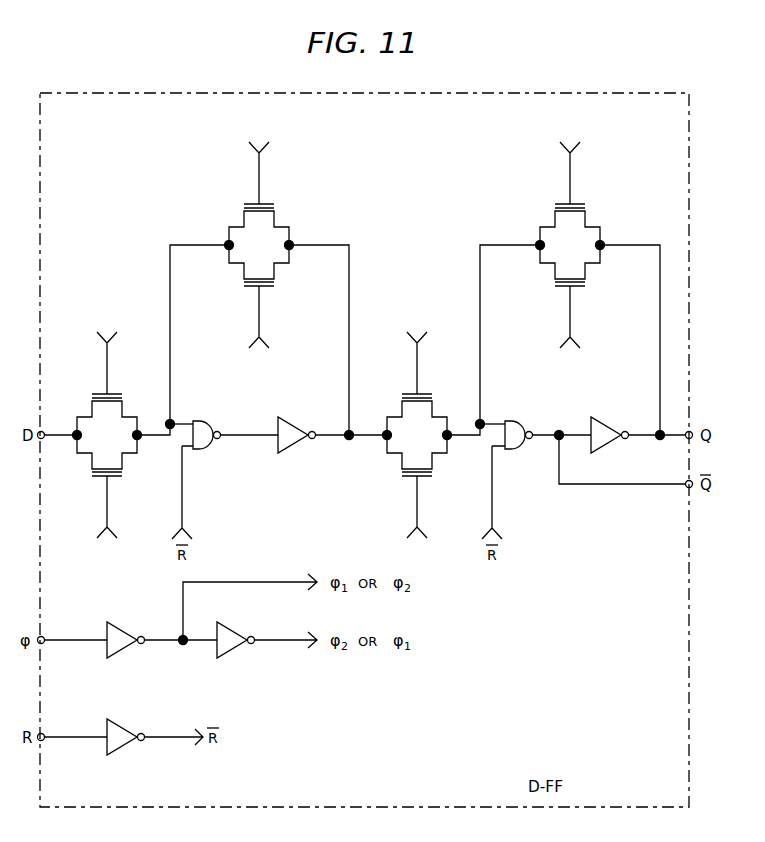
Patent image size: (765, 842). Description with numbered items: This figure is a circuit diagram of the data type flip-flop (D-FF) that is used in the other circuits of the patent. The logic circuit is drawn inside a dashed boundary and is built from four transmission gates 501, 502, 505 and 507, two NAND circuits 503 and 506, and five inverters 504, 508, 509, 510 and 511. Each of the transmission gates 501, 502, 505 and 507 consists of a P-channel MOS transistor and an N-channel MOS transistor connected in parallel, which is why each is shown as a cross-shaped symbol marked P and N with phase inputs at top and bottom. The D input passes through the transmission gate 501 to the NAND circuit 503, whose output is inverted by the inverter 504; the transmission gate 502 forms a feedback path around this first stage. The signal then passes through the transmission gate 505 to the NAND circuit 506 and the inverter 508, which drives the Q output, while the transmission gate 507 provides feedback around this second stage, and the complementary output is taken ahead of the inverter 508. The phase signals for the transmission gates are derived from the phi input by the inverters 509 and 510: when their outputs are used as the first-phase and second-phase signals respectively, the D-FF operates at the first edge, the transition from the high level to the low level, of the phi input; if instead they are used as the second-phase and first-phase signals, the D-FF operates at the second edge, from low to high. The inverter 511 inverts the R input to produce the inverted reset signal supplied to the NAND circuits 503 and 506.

The transmission gate 501 is at (95, 443).
The transmission gate 502 is at (247, 253).
The NAND circuit 503 is at (206, 421).
The inverter 504 is at (292, 423).
The transmission gate 505 is at (405, 443).
The NAND circuit 506 is at (518, 421).
The transmission gate 507 is at (558, 253).
The inverter 508 is at (605, 423).
The inverter 509 is at (122, 630).
The inverter 510 is at (232, 630).
The inverter 511 is at (122, 727).